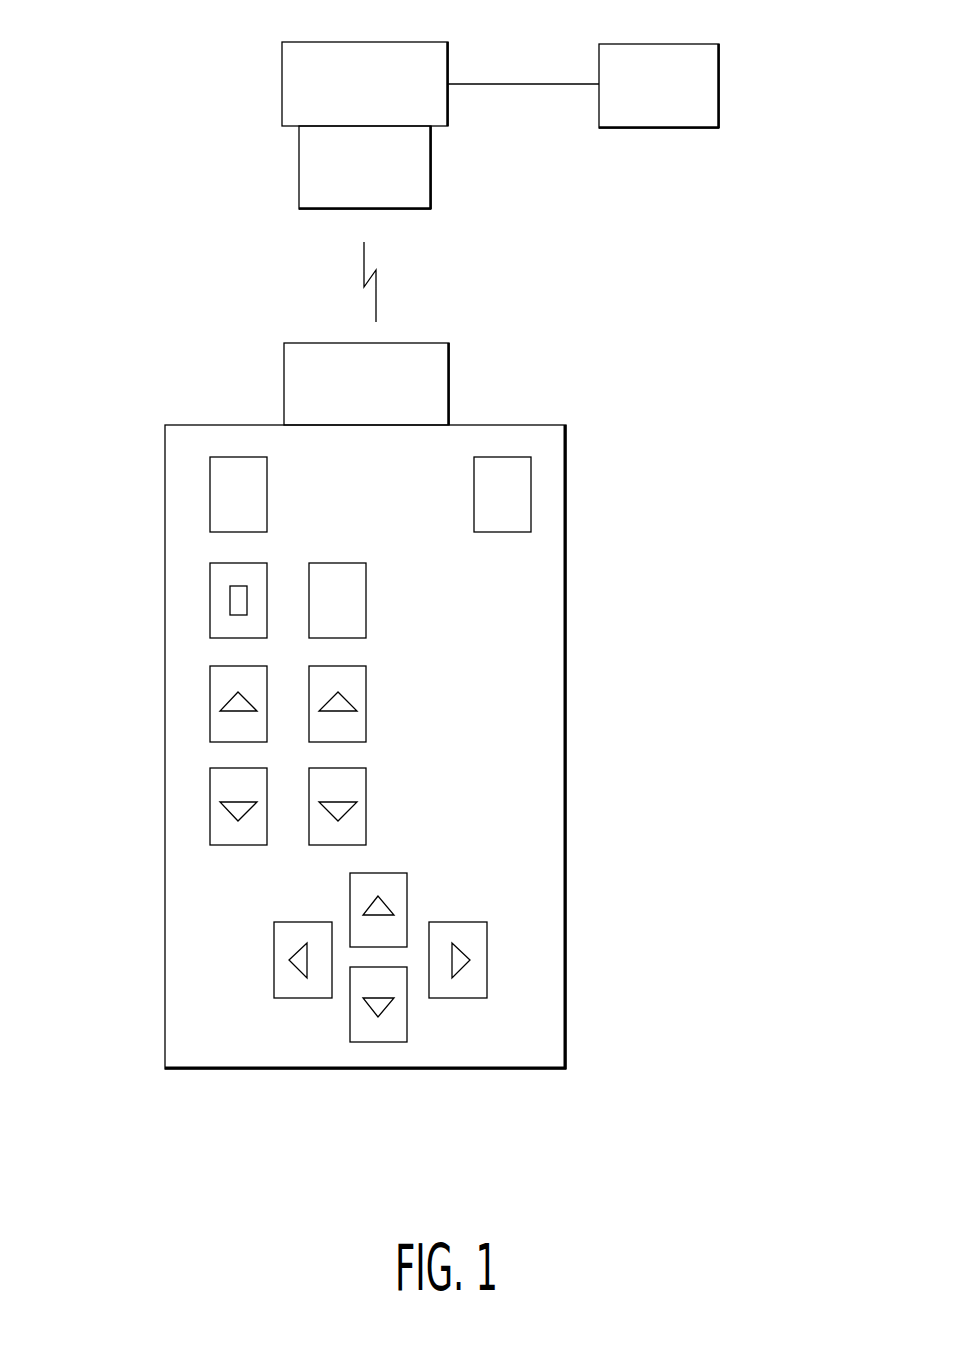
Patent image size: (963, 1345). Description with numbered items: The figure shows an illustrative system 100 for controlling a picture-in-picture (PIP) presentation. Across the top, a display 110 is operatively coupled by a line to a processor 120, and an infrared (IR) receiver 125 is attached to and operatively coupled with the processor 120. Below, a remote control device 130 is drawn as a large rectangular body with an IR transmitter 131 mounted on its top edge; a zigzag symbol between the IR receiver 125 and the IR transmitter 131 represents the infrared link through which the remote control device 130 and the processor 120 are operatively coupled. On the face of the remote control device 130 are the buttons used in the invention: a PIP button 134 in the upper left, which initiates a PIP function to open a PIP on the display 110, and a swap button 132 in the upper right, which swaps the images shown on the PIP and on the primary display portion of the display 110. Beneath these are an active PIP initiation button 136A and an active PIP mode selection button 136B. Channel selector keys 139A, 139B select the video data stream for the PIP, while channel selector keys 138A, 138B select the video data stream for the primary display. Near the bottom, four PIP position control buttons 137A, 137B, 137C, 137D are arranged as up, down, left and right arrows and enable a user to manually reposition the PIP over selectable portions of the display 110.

The system 100 is at (127, 41).
The display 110 is at (719, 86).
The processor 120 is at (282, 82).
The infrared (IR) receiver 125 is at (299, 168).
The remote control device 130 is at (566, 469).
The IR transmitter 131 is at (449, 386).
The swap button 132 is at (531, 515).
The PIP button 134 is at (210, 496).
The active PIP initiation button 136A is at (210, 605).
The active PIP mode selection button 136B is at (366, 602).
The PIP position control button 137A is at (407, 888).
The PIP position control button 137B is at (376, 1042).
The PIP position control button 137C is at (274, 966).
The PIP position control button 137D is at (487, 968).
The channel selector key 138A is at (366, 707).
The channel selector key 138B is at (366, 806).
The channel selector key 139A is at (210, 712).
The channel selector key 139B is at (210, 810).